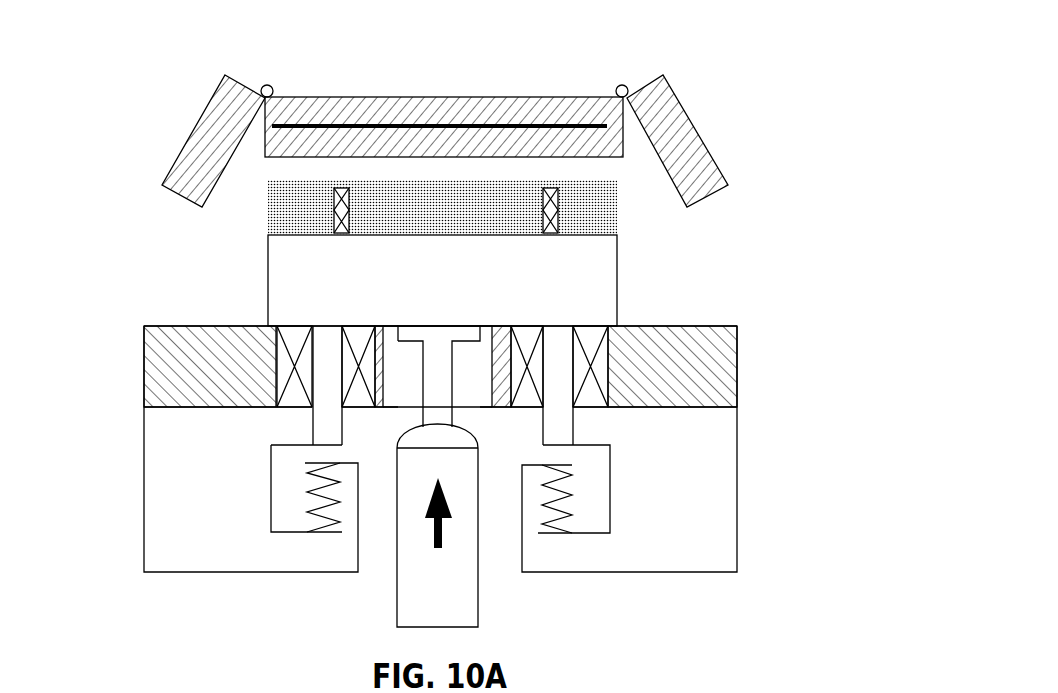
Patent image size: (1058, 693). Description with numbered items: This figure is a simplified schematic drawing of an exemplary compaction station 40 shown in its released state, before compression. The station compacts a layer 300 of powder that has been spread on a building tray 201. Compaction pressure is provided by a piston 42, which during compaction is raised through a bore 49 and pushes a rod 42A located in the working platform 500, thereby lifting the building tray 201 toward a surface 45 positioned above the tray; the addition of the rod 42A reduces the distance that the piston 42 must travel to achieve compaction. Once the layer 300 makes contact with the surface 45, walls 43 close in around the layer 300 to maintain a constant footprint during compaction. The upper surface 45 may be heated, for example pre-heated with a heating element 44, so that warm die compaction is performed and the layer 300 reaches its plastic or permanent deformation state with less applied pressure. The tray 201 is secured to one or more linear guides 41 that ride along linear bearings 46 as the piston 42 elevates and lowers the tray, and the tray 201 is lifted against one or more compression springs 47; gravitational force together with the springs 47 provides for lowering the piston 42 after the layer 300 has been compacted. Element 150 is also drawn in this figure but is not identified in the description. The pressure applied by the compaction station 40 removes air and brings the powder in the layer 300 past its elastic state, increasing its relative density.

The compaction station 40 is at (828, 67).
The linear guides 41 is at (568, 408).
The piston 42 is at (480, 572).
The rod 42A is at (423, 370).
The walls 43 is at (240, 78).
The heating element 44 is at (543, 118).
The surface 45 is at (518, 156).
The linear bearings 46 is at (610, 382).
The compression springs 47 is at (315, 488).
The bore 49 is at (483, 410).
The seal element 150 is at (334, 203).
The building tray 201 is at (598, 283).
The layer 300 is at (617, 210).
The working platform 500 is at (165, 362).